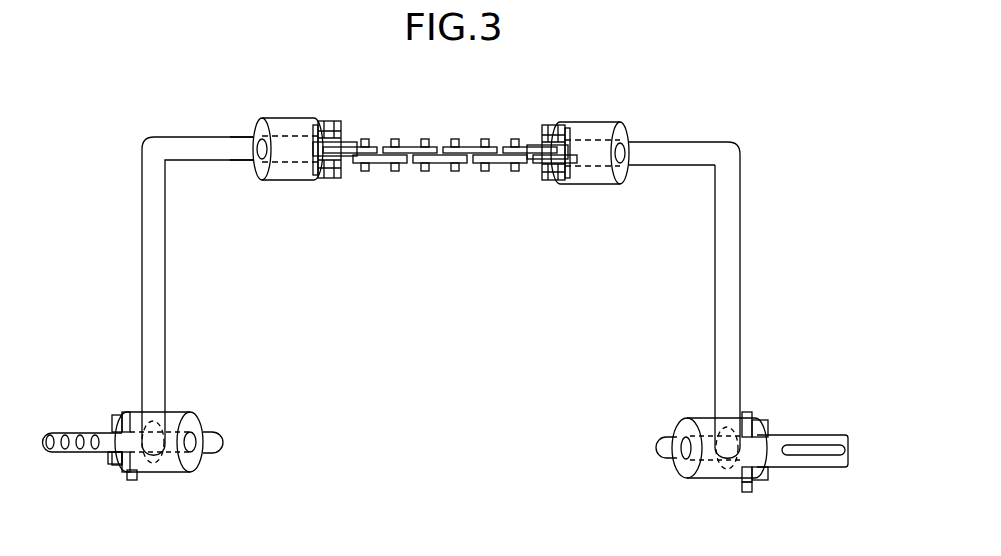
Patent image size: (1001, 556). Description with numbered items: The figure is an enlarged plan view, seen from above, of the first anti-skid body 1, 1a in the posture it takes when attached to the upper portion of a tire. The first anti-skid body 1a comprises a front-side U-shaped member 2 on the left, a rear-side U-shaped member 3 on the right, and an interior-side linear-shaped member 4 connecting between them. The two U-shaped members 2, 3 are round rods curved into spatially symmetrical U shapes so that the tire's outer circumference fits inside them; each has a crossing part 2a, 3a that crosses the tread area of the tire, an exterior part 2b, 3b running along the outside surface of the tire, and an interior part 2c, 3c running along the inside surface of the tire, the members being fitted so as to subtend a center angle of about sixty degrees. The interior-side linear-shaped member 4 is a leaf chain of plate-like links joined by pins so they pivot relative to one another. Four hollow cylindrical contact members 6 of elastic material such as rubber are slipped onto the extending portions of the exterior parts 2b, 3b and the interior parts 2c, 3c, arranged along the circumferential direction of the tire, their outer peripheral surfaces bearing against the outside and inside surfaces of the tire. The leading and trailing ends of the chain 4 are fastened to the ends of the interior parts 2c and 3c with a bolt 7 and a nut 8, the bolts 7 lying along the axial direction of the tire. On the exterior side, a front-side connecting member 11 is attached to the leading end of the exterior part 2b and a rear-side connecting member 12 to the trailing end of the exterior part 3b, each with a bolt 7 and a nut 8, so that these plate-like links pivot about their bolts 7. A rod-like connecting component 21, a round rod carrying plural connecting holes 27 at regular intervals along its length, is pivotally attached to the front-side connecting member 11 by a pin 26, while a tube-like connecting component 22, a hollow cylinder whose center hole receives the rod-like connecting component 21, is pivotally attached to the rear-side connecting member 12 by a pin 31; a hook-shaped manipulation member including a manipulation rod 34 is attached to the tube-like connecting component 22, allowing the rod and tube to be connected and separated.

The first anti-skid body 1 is at (443, 463).
The first anti-skid body 1a is at (445, 301).
The front-side U-shaped member 2 is at (183, 116).
The crossing part 2a is at (166, 294).
The exterior part 2b is at (224, 447).
The interior part 2c is at (217, 161).
The rear-side U-shaped member 3 is at (710, 116).
The crossing part 3a is at (714, 302).
The exterior part 3b is at (656, 452).
The interior part 3c is at (665, 166).
The interior-side linear-shaped member 4 is at (440, 171).
The contact member 6 is at (282, 118).
The bolt 7 is at (330, 179).
The nut 8 is at (336, 127).
The front-side connecting member 11 is at (109, 423).
The rear-side connecting member 12 is at (766, 422).
The rod-like connecting component 21 is at (57, 431).
The tube-like connecting component 22 is at (828, 432).
The pin 26 is at (112, 465).
The connecting holes 27 is at (77, 450).
The pin 31 is at (765, 482).
The manipulation rod 34 is at (828, 456).